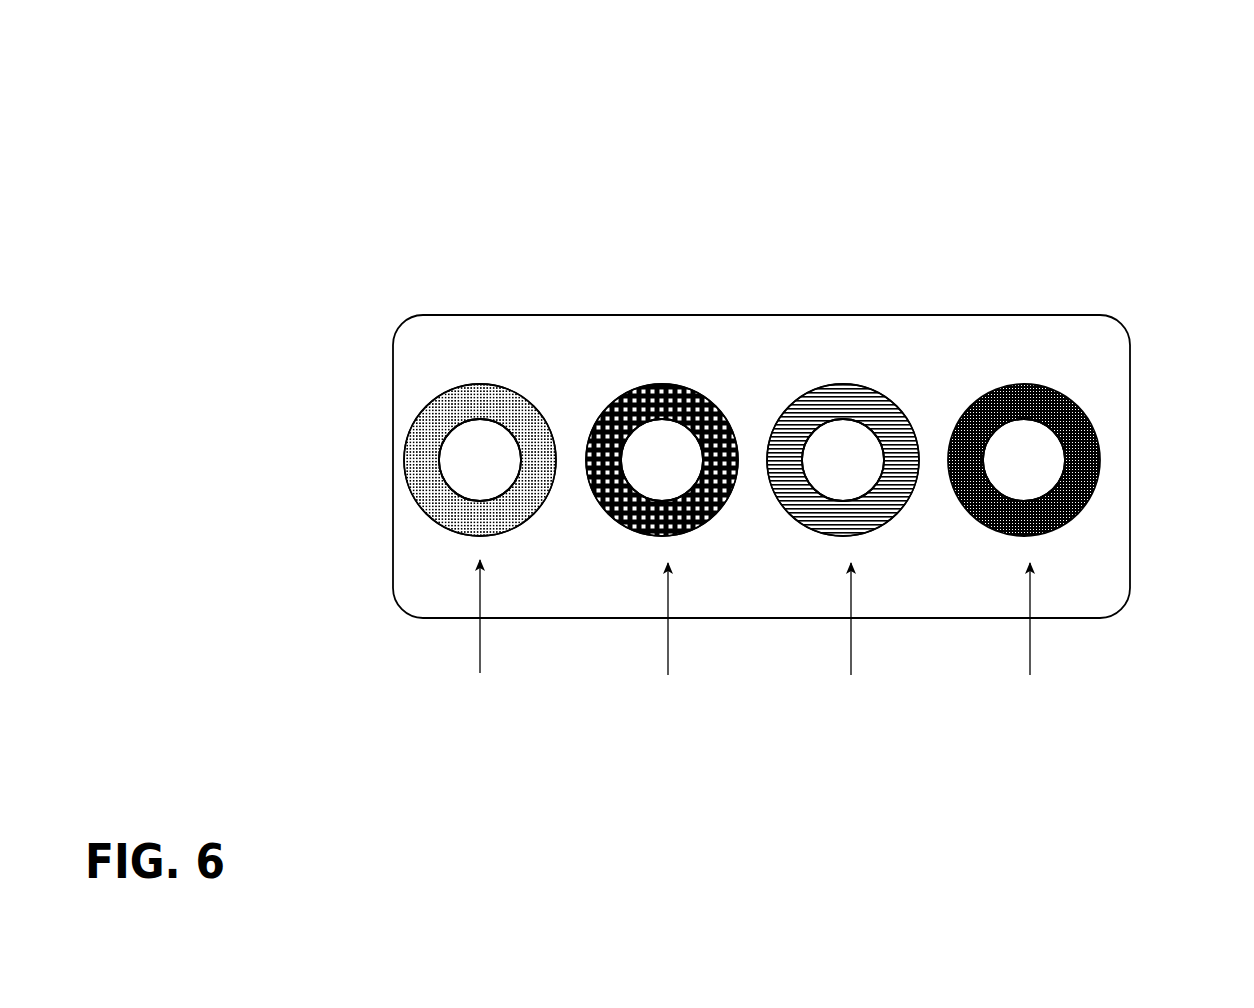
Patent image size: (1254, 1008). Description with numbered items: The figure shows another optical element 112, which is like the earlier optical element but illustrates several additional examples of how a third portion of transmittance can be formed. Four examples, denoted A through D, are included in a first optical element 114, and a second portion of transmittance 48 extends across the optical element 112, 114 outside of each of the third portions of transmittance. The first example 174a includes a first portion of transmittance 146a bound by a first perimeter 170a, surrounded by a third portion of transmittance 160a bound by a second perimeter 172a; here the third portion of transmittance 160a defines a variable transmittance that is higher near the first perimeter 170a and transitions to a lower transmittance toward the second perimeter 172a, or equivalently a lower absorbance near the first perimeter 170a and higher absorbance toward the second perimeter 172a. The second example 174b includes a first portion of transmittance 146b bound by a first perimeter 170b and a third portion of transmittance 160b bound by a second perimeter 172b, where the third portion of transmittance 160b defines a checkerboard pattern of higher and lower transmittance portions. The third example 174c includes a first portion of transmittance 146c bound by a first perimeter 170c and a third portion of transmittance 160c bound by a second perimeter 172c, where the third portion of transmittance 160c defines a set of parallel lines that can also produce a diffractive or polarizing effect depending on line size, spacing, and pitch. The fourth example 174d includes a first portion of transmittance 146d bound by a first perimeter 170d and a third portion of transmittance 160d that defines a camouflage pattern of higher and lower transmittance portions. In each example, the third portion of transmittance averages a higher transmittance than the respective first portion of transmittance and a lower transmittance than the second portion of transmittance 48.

The optical element 112 is at (413, 78).
The first optical element 114 is at (355, 273).
The second portion of transmittance 48 is at (975, 361).
The third portion of transmittance 160a is at (435, 398).
The third portion of transmittance 160b is at (652, 390).
The third portion of transmittance 160c is at (822, 407).
The third portion of transmittance 160d is at (1045, 393).
The first portion of transmittance 146a is at (500, 425).
The first portion of transmittance 146b is at (682, 440).
The first portion of transmittance 146c is at (858, 437).
The first portion of transmittance 146d is at (1045, 443).
The first perimeter 170a is at (444, 484).
The first perimeter 170b is at (633, 488).
The first perimeter 170c is at (822, 496).
The first perimeter 170d is at (1002, 498).
The second perimeter 172a is at (443, 525).
The second perimeter 172b is at (645, 527).
The second perimeter 172c is at (880, 525).
The first example 174a is at (486, 633).
The second example 174b is at (672, 634).
The third example 174c is at (854, 633).
The fourth example 174d is at (1032, 635).